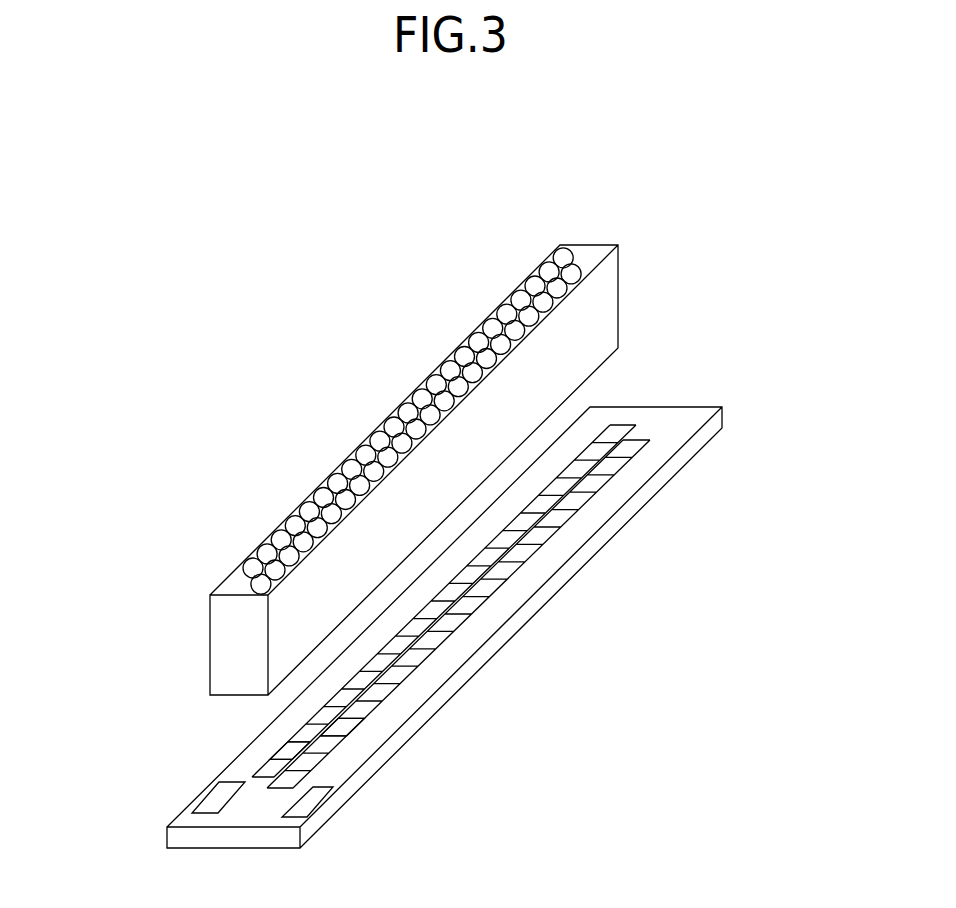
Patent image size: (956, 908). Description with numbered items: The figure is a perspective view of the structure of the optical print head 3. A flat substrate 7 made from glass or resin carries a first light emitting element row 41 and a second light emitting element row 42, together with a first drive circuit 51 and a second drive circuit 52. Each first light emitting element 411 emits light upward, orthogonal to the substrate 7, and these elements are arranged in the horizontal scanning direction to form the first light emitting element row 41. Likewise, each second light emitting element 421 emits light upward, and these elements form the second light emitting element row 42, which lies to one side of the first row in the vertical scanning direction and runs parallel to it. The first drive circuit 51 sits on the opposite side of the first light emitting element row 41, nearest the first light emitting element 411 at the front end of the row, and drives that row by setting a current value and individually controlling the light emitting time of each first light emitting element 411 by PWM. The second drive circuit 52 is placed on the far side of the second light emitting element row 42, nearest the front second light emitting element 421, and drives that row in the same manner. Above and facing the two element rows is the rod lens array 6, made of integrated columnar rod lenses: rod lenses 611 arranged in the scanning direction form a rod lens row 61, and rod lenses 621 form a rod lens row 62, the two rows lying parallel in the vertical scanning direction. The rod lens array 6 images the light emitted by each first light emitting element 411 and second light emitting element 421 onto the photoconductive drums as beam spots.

The optical print head 3 is at (733, 207).
The rod lens array 6 is at (227, 645).
The rod lens row 61 is at (272, 532).
The rod lens 611 is at (248, 558).
The rod lens row 62 is at (298, 560).
The rod lens 621 is at (273, 582).
The substrate 7 is at (680, 430).
The first light emitting element row 41 is at (307, 725).
The first light emitting element 411 is at (268, 762).
The second light emitting element row 42 is at (368, 697).
The second light emitting element 421 is at (333, 748).
The first drive circuit 51 is at (207, 797).
The second drive circuit 52 is at (313, 802).